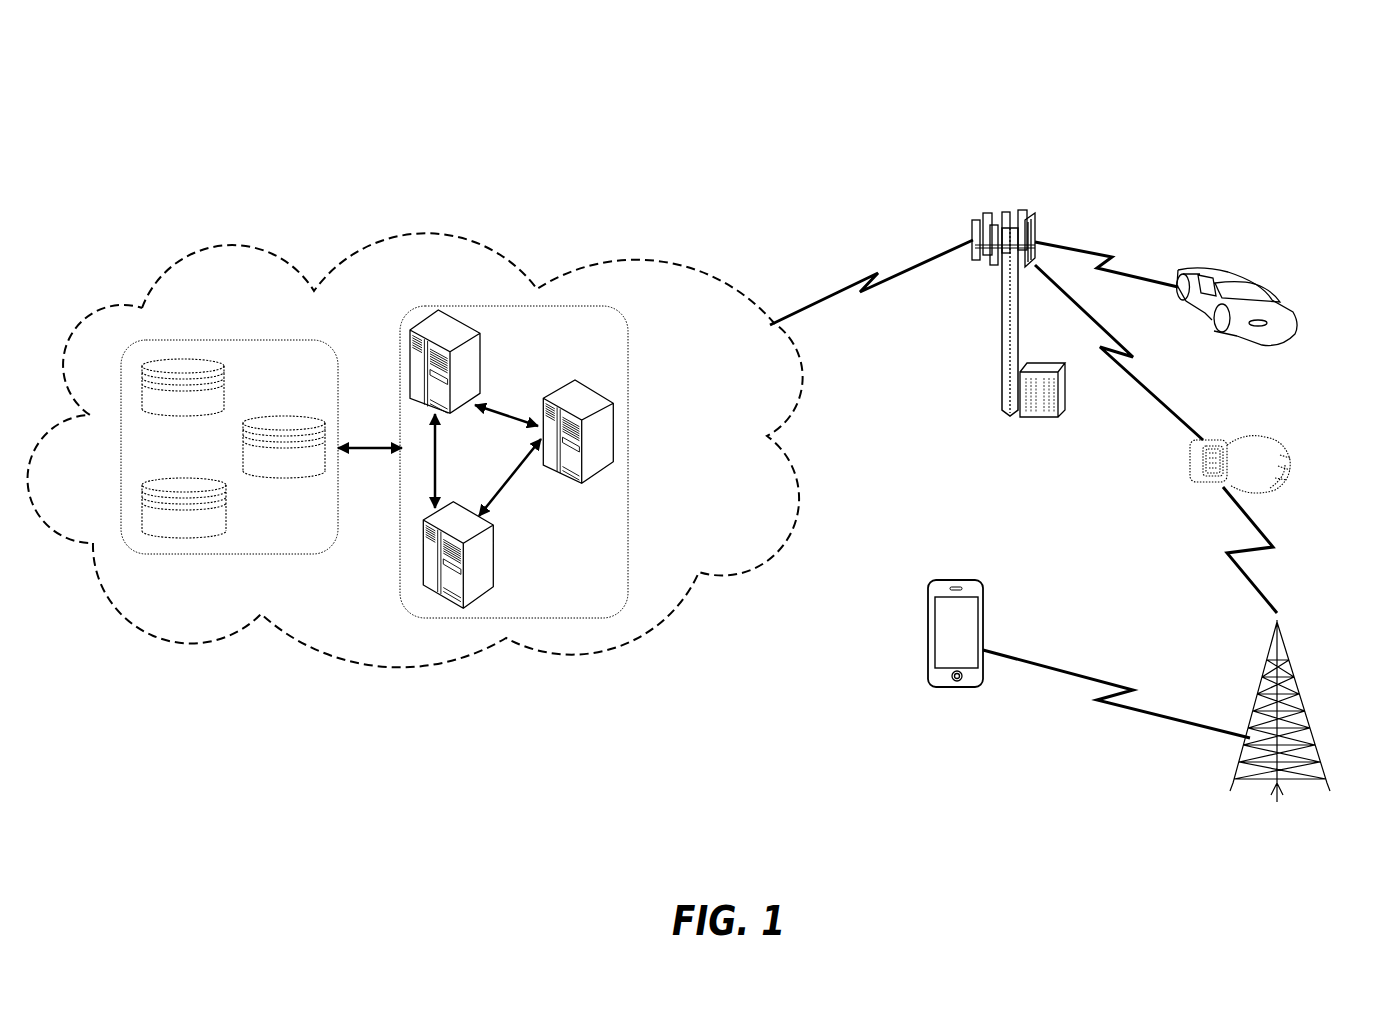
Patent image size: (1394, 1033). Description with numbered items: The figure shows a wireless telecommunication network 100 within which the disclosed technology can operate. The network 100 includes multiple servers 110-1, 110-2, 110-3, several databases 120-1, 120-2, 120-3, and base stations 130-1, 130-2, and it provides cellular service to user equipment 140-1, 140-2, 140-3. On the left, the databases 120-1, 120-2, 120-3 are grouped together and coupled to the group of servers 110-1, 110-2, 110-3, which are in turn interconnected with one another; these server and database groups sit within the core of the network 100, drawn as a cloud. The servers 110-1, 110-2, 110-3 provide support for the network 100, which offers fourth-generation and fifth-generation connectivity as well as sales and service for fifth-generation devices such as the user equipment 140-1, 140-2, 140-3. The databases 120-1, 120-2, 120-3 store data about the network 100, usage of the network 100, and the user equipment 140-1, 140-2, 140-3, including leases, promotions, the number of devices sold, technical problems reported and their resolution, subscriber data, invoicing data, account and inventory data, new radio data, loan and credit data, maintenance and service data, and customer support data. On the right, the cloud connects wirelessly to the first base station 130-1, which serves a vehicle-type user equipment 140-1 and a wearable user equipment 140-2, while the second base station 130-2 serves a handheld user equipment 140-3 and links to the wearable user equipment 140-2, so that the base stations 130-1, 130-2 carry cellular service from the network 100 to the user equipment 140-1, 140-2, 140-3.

The wireless telecommunication network 100 is at (1140, 110).
The server 110-1 is at (480, 378).
The server 110-2 is at (493, 567).
The server 110-3 is at (550, 472).
The database 120-1 is at (224, 403).
The database 120-2 is at (269, 519).
The database 120-3 is at (245, 469).
The base station 130-1 is at (1000, 327).
The base station 130-2 is at (1290, 688).
The user equipment 140-1 is at (1323, 272).
The user equipment 140-2 is at (1213, 440).
The user equipment 140-3 is at (1007, 555).